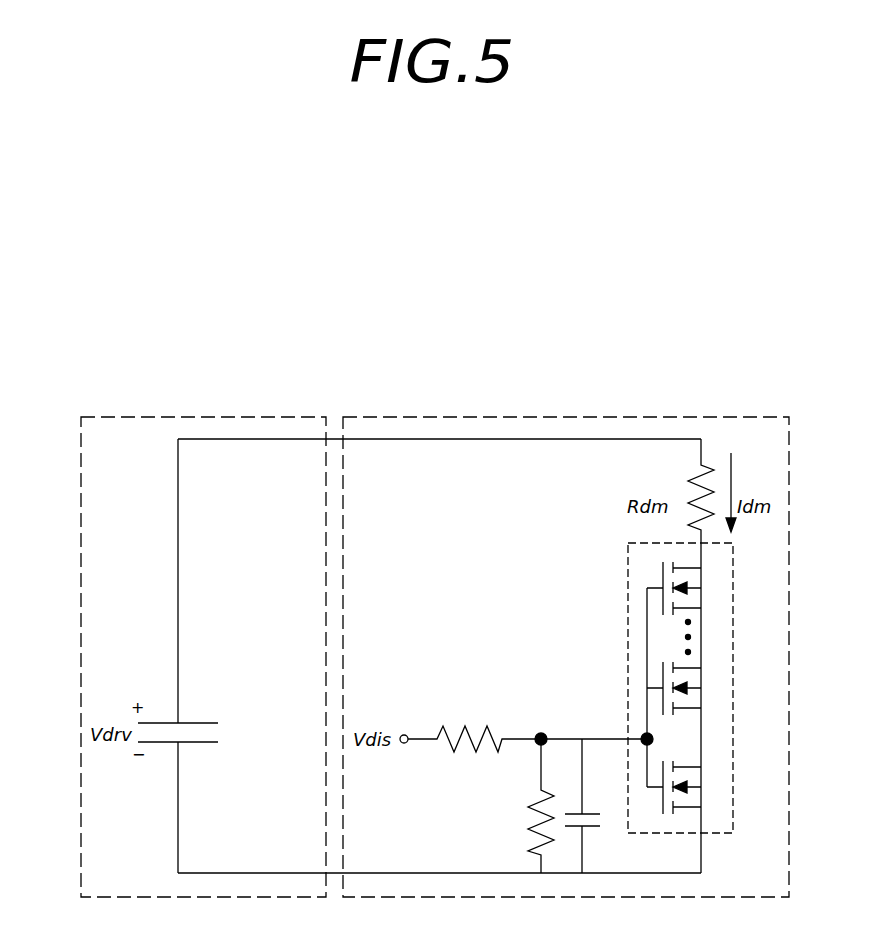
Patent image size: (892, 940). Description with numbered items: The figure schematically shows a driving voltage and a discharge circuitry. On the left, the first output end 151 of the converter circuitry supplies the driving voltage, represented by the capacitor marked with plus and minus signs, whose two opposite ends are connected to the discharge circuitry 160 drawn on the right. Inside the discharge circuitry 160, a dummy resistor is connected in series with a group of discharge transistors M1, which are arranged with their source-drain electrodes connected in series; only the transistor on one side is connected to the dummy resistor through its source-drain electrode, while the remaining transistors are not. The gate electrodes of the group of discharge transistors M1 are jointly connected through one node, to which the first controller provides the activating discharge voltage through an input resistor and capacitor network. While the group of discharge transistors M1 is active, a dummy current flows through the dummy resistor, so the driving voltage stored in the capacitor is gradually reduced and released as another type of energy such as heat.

The first output end 151 is at (243, 414).
The discharge circuitry 160 is at (720, 414).
The group of discharge transistors M1 is at (628, 647).